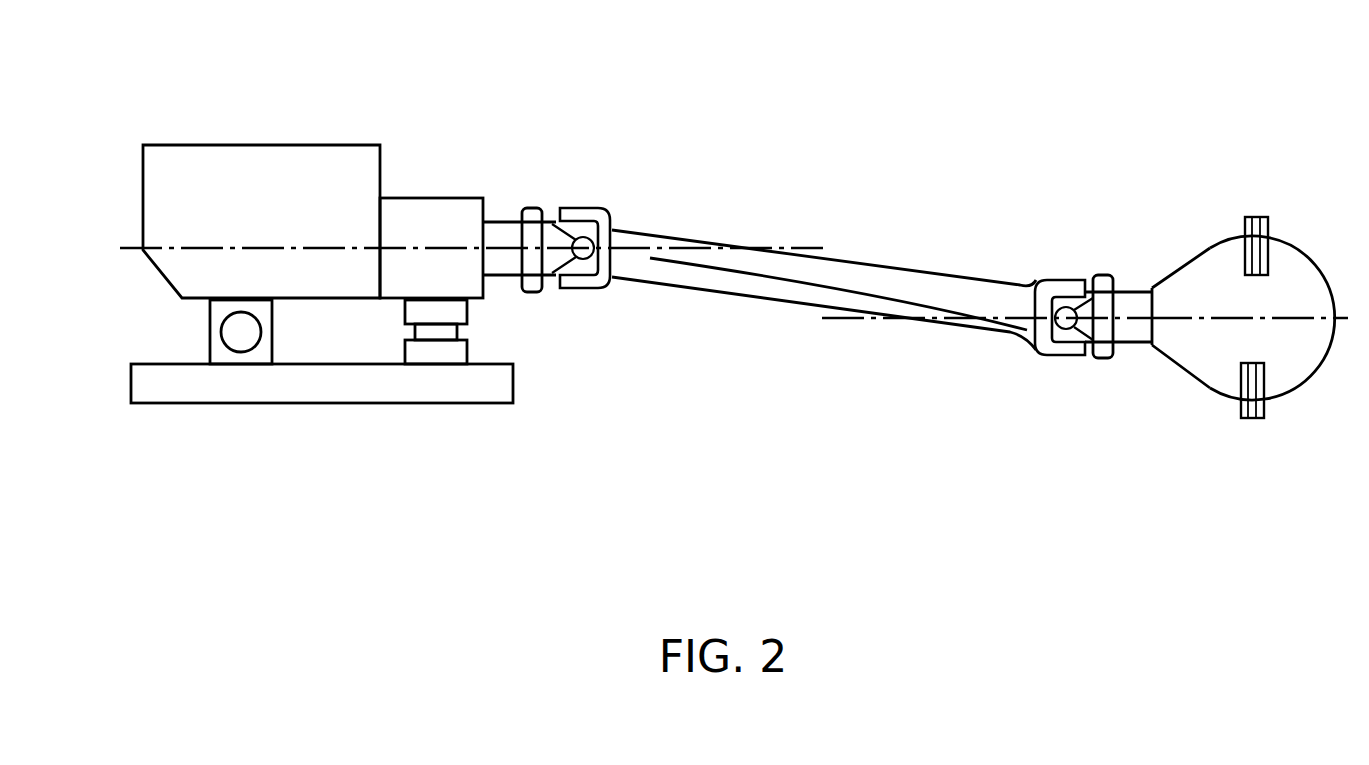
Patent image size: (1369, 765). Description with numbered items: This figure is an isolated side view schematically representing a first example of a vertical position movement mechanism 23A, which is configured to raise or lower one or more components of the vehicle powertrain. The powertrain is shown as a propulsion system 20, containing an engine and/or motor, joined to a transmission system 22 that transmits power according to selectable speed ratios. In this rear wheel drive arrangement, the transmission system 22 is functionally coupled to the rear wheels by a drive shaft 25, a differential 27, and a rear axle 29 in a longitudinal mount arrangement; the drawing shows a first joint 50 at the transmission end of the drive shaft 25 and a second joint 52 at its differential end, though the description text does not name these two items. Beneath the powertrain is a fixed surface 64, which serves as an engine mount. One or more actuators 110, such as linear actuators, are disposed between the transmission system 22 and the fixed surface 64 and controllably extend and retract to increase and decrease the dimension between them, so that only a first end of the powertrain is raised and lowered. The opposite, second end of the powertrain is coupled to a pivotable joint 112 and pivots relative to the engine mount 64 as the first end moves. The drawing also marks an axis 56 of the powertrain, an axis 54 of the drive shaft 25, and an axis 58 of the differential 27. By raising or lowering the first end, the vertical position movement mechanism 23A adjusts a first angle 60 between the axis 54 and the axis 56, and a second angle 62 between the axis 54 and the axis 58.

The propulsion system 20 is at (262, 145).
The transmission system 22 is at (440, 198).
The axis of the powertrain 56 is at (247, 247).
The first universal joint 50 is at (580, 207).
The drive shaft 25 is at (947, 278).
The axis of the drive shaft 54 is at (812, 283).
The first angle 60 is at (747, 277).
The second angle 62 is at (890, 318).
The second universal joint 52 is at (1056, 356).
The differential 27 is at (1130, 294).
The rear axle 29 is at (1215, 392).
The axis of the differential 58 is at (1298, 318).
The fixed surface 64 is at (467, 405).
The pivotable joint 112 is at (208, 352).
The actuators 110 is at (405, 352).
The vertical position movement mechanism 23A is at (505, 339).